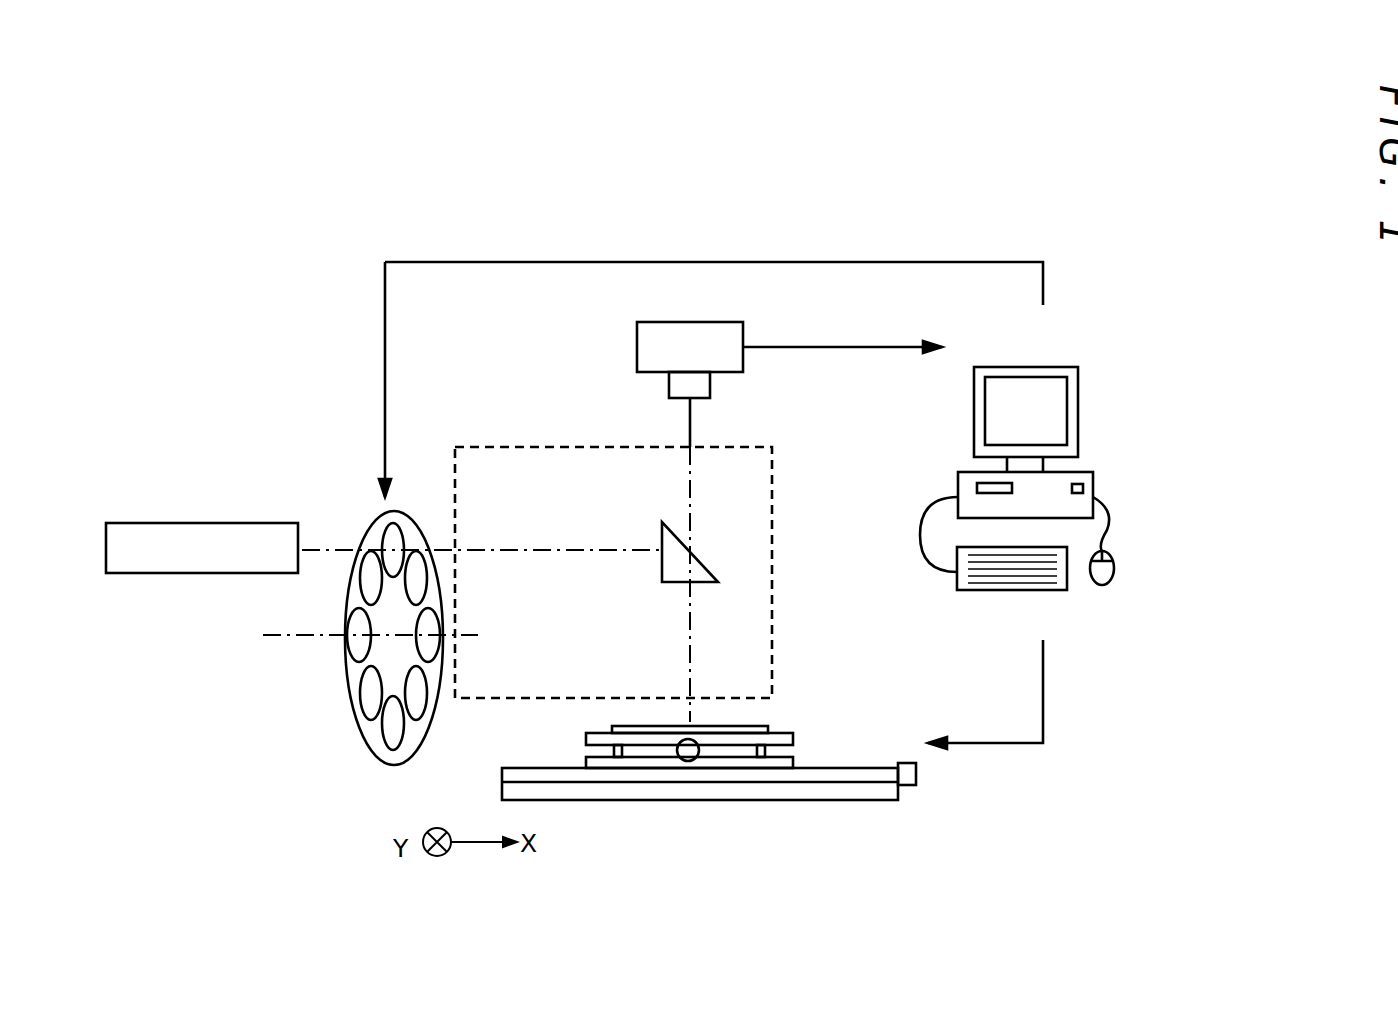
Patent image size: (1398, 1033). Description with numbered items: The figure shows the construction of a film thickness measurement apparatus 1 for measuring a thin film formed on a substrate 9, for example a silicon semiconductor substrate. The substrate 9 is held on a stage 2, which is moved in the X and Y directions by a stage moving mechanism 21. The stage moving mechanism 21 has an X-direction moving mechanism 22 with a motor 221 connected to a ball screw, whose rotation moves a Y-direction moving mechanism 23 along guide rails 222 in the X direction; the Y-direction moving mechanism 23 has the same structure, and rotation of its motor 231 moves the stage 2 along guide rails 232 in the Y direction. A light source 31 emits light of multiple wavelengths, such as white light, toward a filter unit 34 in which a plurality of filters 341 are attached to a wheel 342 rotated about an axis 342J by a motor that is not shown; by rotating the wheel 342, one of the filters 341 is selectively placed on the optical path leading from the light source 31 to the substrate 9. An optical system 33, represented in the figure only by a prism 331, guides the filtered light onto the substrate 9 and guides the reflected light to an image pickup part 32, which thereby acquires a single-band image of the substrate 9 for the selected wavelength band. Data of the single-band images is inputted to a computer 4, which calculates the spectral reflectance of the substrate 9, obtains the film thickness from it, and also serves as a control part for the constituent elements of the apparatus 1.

The film thickness measurement apparatus 1 is at (333, 216).
The stage 2 is at (783, 738).
The computer 4 is at (1095, 336).
The substrate 9 is at (758, 727).
The stage moving mechanism 21 is at (749, 755).
The X-direction moving mechanism 22 is at (765, 815).
The Y-direction moving mechanism 23 is at (631, 785).
The light source 31 is at (222, 523).
The image pickup part 32 is at (692, 322).
The optical system 33 is at (651, 584).
The filter unit 34 is at (306, 612).
The motor 221 is at (916, 772).
The guide rails 222 is at (838, 775).
The motor 231 is at (688, 762).
The guide rails 232 is at (618, 758).
The prism 331 is at (705, 572).
The filters 341 is at (393, 532).
The wheel 342 is at (348, 697).
The axis 342J is at (275, 635).